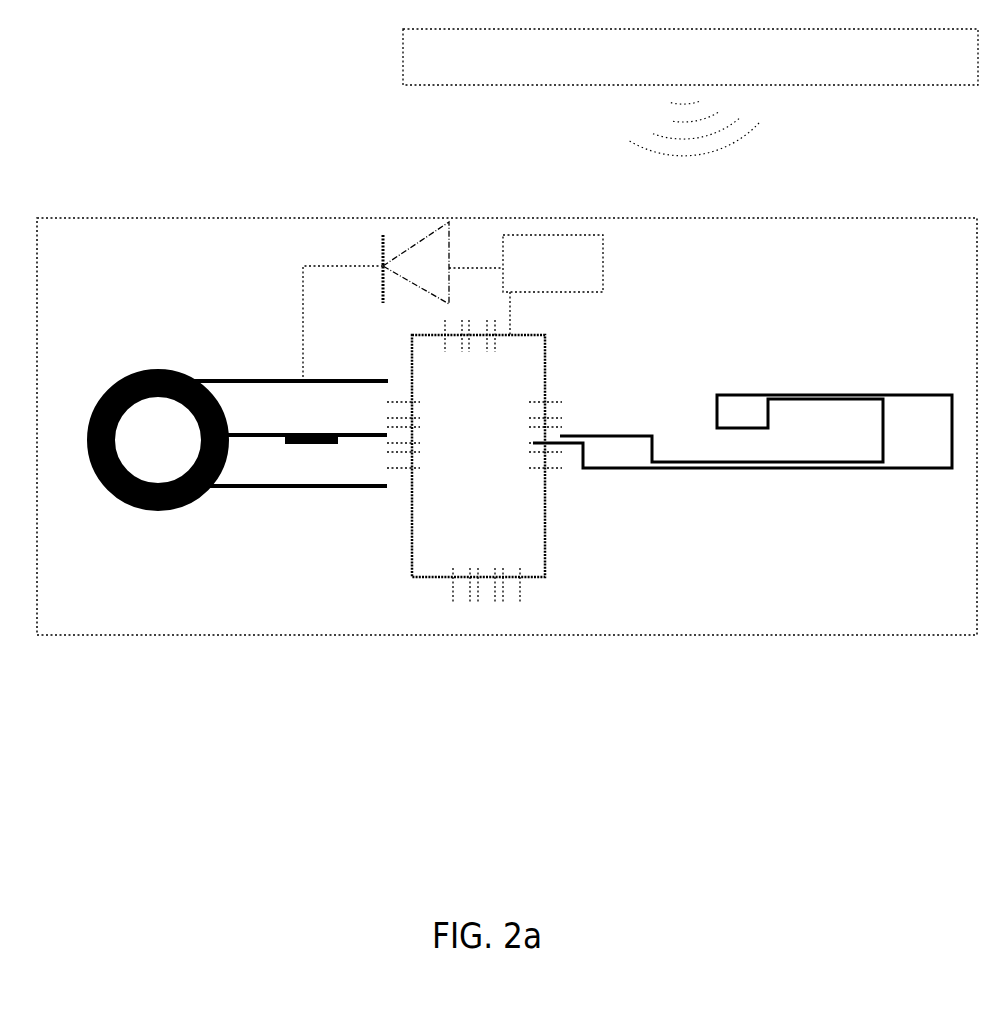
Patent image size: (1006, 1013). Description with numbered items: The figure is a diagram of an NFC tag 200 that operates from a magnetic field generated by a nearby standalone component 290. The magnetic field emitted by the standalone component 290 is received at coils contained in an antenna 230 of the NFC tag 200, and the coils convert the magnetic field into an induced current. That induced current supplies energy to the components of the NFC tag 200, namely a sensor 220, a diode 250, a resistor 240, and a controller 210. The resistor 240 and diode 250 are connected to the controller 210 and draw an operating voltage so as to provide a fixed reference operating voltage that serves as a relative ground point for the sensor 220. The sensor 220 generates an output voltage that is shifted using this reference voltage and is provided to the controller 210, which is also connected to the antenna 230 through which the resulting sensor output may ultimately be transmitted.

The NFC tag 200 is at (176, 215).
The controller 210 is at (474, 461).
The sensor 220 is at (137, 371).
The antenna 230 is at (780, 390).
The resistor 240 is at (553, 285).
The diode 250 is at (425, 262).
The standalone component 290 is at (690, 92).